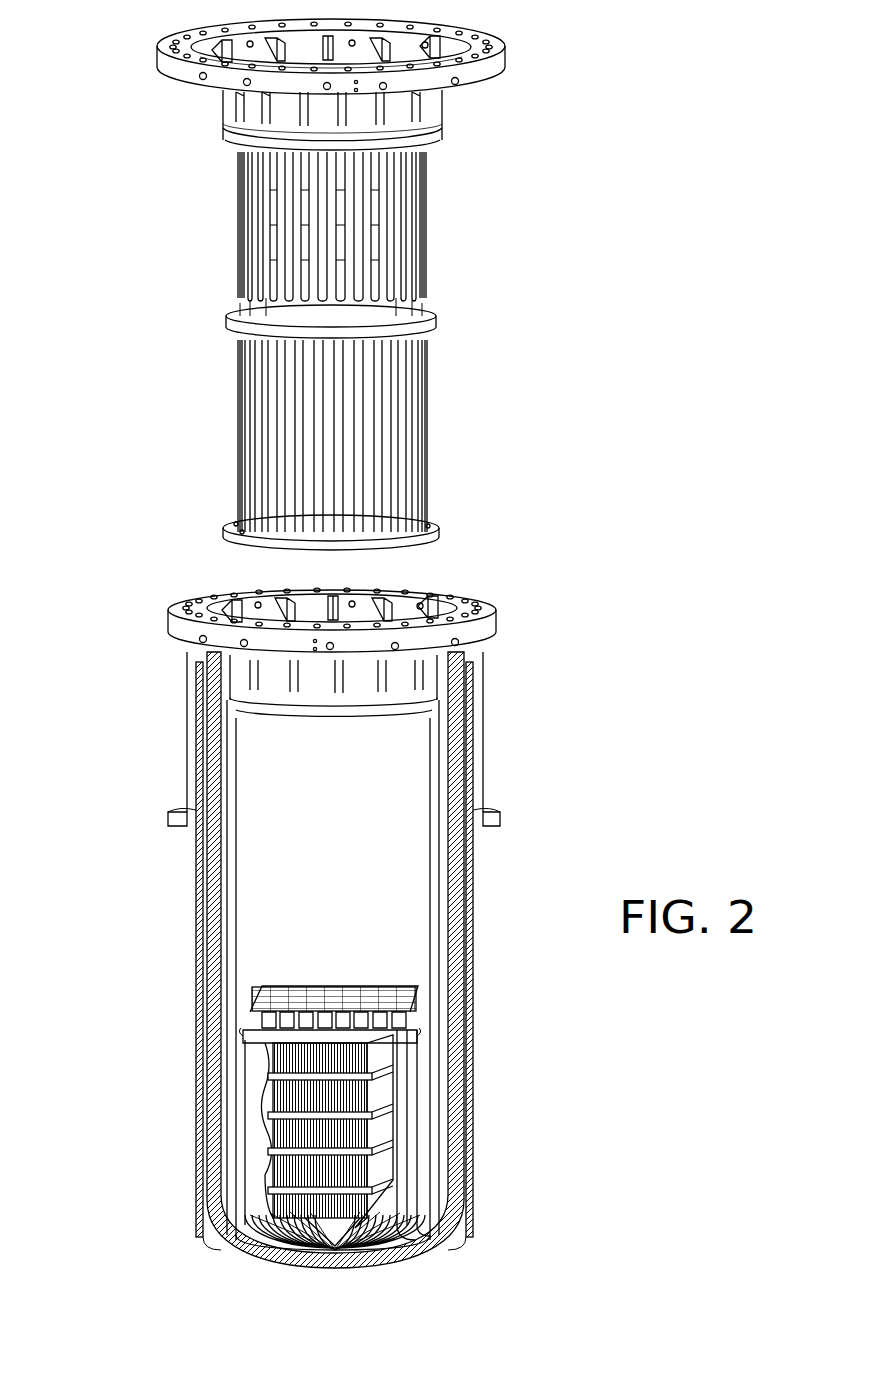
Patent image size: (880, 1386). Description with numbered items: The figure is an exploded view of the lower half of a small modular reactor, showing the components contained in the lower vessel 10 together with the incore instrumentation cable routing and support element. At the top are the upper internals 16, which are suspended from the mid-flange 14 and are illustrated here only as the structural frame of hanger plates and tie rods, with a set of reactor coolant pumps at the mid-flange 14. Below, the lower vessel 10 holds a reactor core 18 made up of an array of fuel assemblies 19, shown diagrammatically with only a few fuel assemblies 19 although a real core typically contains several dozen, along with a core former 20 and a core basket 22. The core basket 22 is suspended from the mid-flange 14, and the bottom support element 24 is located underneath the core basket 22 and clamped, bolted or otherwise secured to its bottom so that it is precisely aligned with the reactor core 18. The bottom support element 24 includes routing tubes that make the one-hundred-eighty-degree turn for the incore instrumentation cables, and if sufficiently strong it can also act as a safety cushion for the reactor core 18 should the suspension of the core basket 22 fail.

The lower vessel 10 is at (483, 867).
The mid-flange 14 is at (157, 61).
The upper internals 16 is at (590, 35).
The reactor core 18 is at (305, 1100).
The fuel assemblies 19 is at (380, 990).
The core former 20 is at (390, 1197).
The core basket 22 is at (240, 897).
The bottom support element 24 is at (450, 1249).